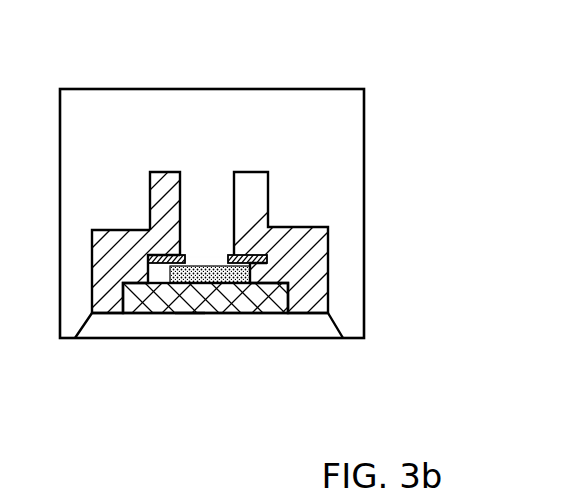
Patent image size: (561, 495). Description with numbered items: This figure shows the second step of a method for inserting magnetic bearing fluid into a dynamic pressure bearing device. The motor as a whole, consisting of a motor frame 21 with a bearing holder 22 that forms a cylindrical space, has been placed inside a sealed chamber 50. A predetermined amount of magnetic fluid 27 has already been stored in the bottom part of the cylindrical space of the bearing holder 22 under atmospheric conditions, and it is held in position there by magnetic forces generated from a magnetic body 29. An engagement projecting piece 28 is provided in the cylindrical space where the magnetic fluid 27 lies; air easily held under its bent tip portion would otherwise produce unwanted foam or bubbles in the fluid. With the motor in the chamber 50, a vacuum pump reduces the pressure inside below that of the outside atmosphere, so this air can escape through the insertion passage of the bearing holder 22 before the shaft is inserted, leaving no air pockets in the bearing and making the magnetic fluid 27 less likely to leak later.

The sealed chamber 50 is at (245, 88).
The motor frame 21 is at (122, 250).
The bearing holder 22 is at (160, 185).
The magnetic fluid 27 is at (190, 313).
The engagement projecting piece 28 is at (231, 257).
The magnetic body 29 is at (127, 313).